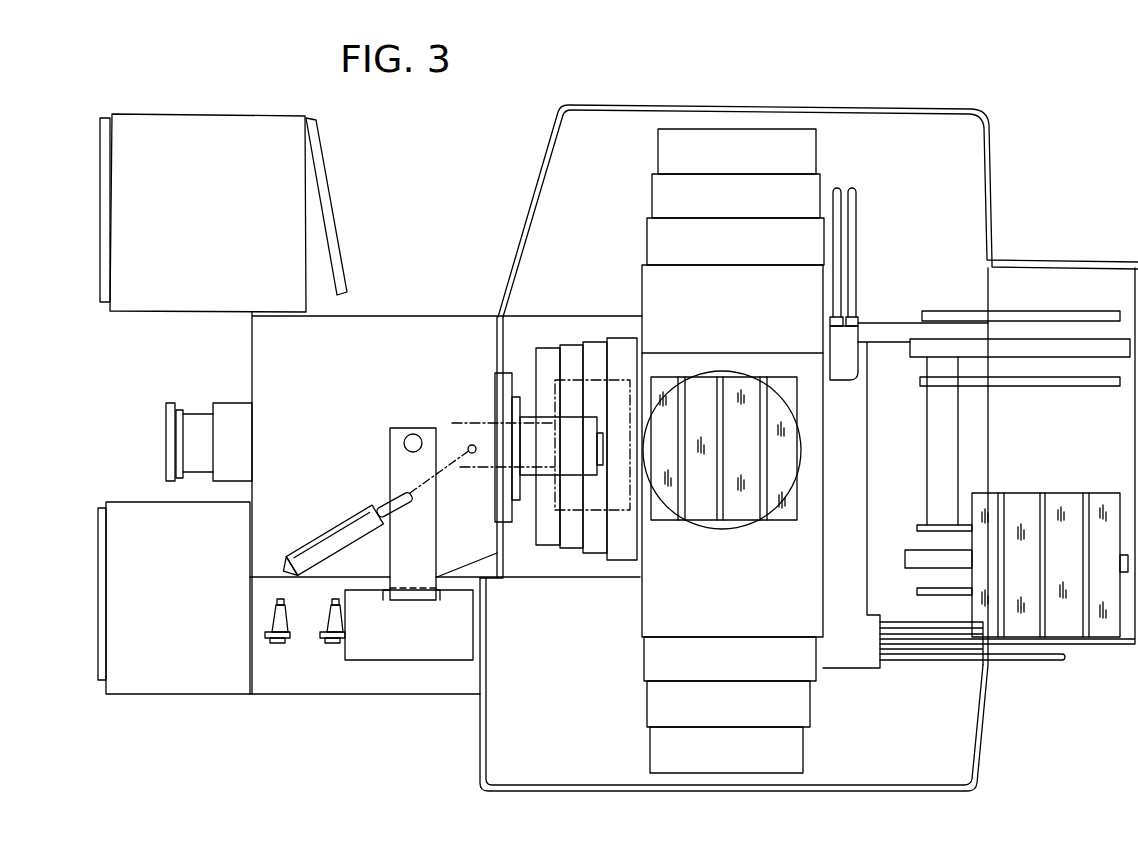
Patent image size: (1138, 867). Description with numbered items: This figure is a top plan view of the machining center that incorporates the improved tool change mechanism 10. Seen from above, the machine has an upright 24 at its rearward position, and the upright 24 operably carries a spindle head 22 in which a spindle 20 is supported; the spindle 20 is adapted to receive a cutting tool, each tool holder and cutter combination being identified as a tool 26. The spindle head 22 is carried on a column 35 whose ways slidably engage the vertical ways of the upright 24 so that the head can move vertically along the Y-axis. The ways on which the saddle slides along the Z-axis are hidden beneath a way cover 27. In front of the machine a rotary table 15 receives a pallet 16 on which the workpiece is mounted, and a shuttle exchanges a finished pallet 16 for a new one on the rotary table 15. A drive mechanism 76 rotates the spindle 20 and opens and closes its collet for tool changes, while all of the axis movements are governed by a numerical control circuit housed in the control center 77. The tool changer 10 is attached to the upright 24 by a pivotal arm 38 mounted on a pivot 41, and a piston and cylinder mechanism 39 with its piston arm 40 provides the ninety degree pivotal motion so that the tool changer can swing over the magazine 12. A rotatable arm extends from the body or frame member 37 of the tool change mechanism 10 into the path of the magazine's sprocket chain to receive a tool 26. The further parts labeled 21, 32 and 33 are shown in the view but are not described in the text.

The tool change mechanism 10 is at (412, 665).
The magazine 12 is at (297, 700).
The rotary table 15 is at (720, 372).
The pallet 16 is at (782, 404).
The spindle 20 is at (638, 385).
The support rails 21 is at (917, 528).
The spindle head 22 is at (545, 430).
The upright 24 is at (365, 332).
The tool 26 is at (268, 623).
The way cover 27 is at (590, 342).
The housing block 32 is at (652, 606).
The stepped block 33 is at (655, 198).
The column 35 is at (500, 393).
The frame member 37 is at (382, 645).
The pivotal arm 38 is at (437, 530).
The piston and cylinder mechanism 39 is at (318, 548).
The piston arm 40 is at (395, 512).
The pivot 41 is at (403, 445).
The drive mechanism 76 is at (232, 408).
The control center 77 is at (215, 213).